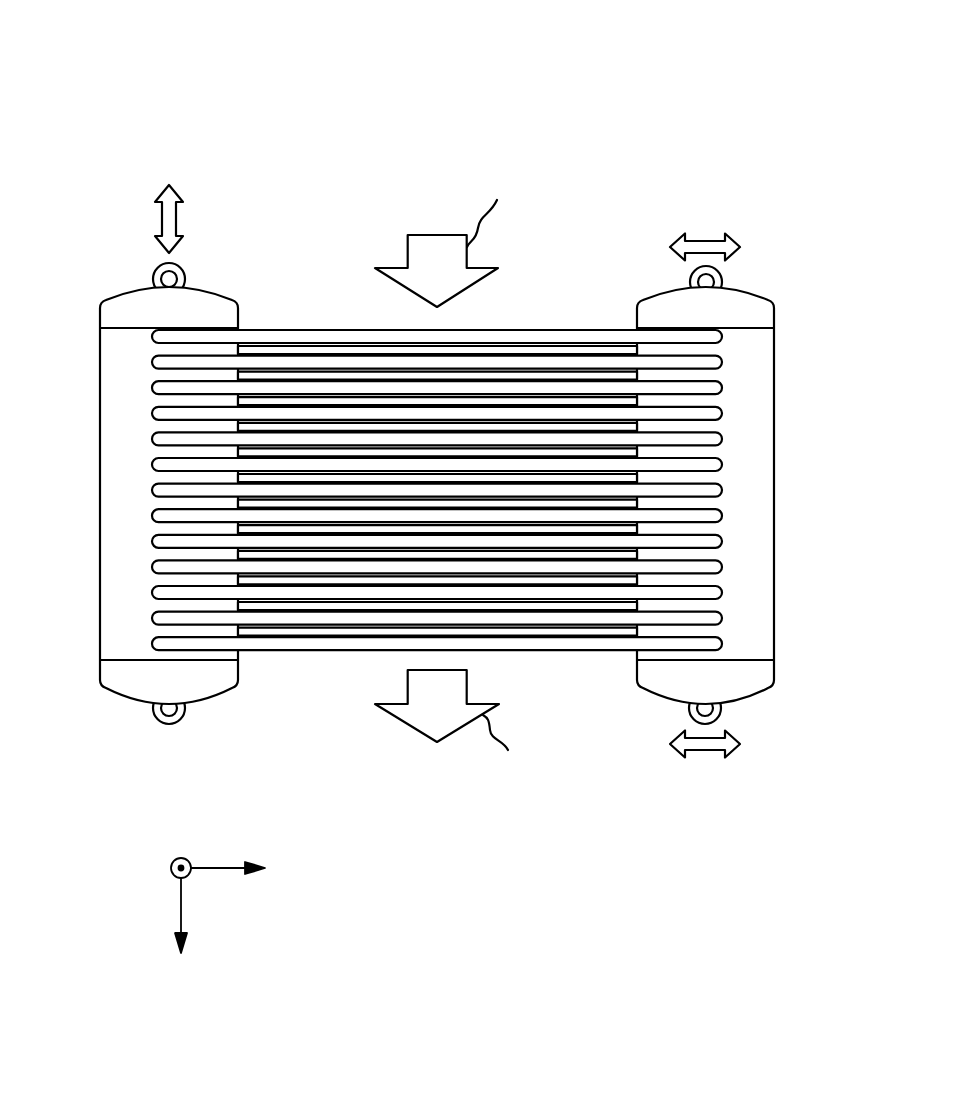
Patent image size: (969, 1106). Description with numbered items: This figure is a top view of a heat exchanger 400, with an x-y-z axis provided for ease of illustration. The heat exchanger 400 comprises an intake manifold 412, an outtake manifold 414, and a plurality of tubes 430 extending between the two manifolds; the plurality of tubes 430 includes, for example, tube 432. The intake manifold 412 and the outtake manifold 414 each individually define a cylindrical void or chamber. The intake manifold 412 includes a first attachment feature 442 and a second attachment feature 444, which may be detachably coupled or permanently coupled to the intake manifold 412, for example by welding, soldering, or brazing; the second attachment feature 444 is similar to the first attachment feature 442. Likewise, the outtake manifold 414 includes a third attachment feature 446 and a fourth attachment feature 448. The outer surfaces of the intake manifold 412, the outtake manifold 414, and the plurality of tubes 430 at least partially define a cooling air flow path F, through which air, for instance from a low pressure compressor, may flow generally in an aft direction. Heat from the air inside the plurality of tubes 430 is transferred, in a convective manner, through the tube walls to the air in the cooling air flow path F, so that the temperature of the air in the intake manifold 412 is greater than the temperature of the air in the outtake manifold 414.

The heat exchanger 400 is at (646, 94).
The intake manifold 412 is at (99, 348).
The outtake manifold 414 is at (776, 350).
The plurality of tubes 430 is at (437, 477).
The tube 432 is at (607, 644).
The first attachment feature 442 is at (156, 720).
The second attachment feature 444 is at (186, 271).
The third attachment feature 446 is at (720, 716).
The fourth attachment feature 448 is at (691, 277).